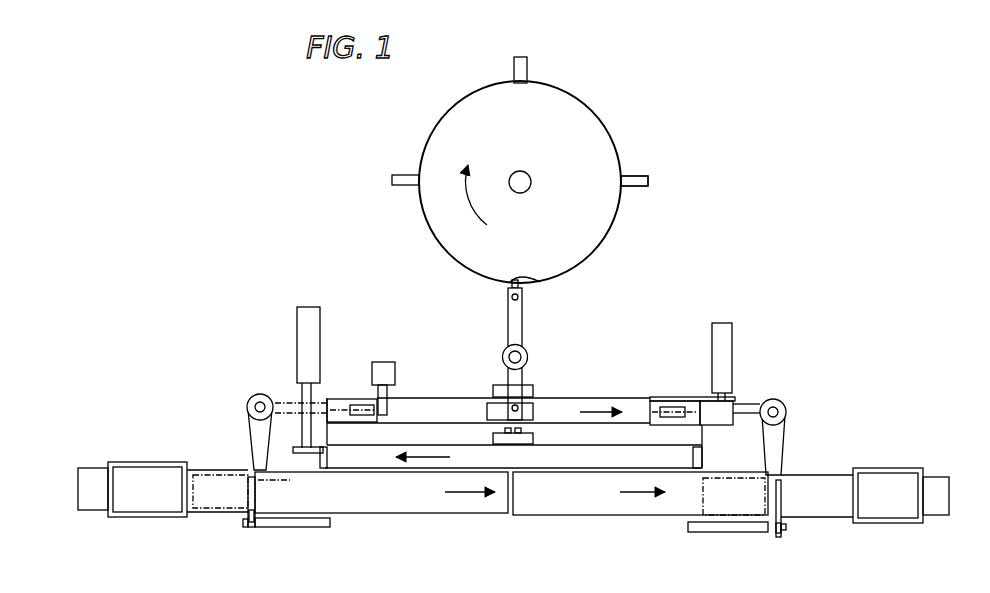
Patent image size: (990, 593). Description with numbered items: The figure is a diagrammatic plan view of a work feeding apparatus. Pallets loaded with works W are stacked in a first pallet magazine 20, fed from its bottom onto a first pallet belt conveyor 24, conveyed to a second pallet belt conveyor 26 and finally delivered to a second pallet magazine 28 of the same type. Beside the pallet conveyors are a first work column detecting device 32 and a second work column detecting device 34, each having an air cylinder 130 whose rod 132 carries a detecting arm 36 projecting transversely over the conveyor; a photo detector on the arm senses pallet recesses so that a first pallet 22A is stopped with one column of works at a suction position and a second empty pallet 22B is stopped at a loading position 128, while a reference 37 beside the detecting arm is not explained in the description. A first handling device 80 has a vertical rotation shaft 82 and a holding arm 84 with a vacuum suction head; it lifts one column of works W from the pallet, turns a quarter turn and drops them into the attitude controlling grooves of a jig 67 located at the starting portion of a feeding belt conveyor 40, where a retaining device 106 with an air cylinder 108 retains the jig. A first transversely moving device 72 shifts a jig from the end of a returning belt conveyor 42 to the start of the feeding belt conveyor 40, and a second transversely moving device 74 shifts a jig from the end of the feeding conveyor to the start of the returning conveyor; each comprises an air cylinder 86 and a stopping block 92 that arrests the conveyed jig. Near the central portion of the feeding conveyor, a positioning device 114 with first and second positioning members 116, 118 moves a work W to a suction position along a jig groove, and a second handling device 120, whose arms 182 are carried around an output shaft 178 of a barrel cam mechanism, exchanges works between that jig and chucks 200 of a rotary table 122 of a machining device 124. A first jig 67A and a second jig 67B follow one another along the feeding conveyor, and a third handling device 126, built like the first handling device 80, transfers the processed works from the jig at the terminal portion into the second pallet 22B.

The first pallet magazine 20 is at (133, 517).
The first pallet 22A is at (200, 508).
The second empty pallet 22B is at (703, 503).
The first pallet belt conveyor 24 is at (475, 513).
The second pallet belt conveyor 26 is at (596, 515).
The second pallet magazine 28 is at (885, 523).
The first work column detecting device 32 is at (269, 528).
The second work column detecting device 34 is at (783, 532).
The detecting arm 36 is at (247, 493).
The center line 37 is at (280, 481).
The feeding belt conveyor 40 is at (422, 405).
The returning belt conveyor 42 is at (571, 465).
The jig 67 is at (650, 424).
The first jig 67A is at (560, 410).
The second jig 67B is at (370, 398).
The first transversely moving device 72 is at (308, 296).
The second transversely moving device 74 is at (746, 326).
The first handling device 80 is at (244, 419).
The vertical rotation shaft 82 is at (255, 395).
The holding arm 84 is at (295, 420).
The air cylinder 86 is at (297, 312).
The stopping block 92 is at (735, 400).
The retaining device 106 is at (392, 360).
The air cylinder 108 is at (383, 362).
The positioning device 114 is at (529, 377).
The first positioning member 116 is at (534, 392).
The second positioning member 118 is at (516, 444).
The second handling device 120 is at (492, 358).
The rotary table 122 is at (615, 135).
The machining device 124 is at (596, 99).
The third handling device 126 is at (787, 432).
The loading position 128 is at (747, 500).
The air cylinder 130 is at (318, 527).
The rod 132 is at (253, 523).
The output shaft 178 is at (509, 350).
The arm 182 is at (522, 319).
The chuck 200 is at (540, 282).
The work W is at (641, 188).